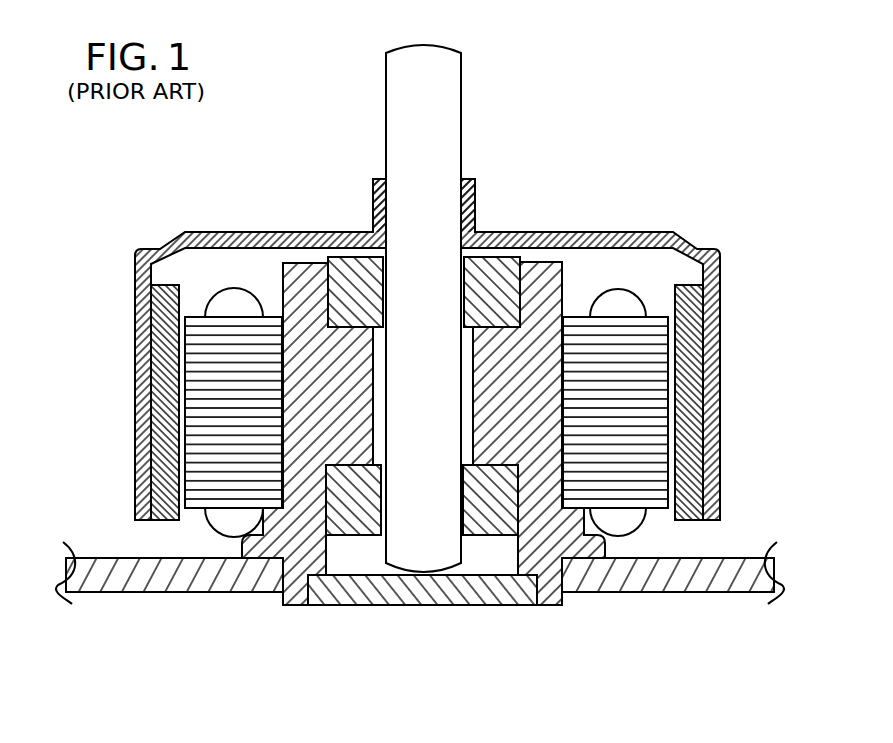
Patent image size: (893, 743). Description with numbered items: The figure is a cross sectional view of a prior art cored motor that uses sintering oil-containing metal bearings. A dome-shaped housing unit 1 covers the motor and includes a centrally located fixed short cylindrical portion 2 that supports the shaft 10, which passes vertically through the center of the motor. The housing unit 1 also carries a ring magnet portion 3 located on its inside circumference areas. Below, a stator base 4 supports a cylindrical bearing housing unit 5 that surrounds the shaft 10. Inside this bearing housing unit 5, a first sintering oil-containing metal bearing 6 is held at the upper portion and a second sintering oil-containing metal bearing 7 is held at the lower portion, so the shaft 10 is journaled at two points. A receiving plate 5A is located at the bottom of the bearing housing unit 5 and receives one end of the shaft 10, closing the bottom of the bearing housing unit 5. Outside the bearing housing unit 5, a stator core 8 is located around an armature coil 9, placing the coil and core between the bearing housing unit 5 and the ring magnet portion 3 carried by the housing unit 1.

The housing unit 1 is at (630, 233).
The fixed short cylindrical portion 2 is at (470, 210).
The ring magnet portion 3 is at (165, 313).
The stator base 4 is at (685, 580).
The cylindrical bearing housing unit 5 is at (538, 520).
The receiving plate 5A is at (383, 597).
The first sintering oil-containing metal bearing 6 is at (498, 280).
The second sintering oil-containing metal bearing 7 is at (355, 518).
The stator core 8 is at (220, 440).
The armature coil 9 is at (235, 305).
The shaft 10 is at (438, 92).